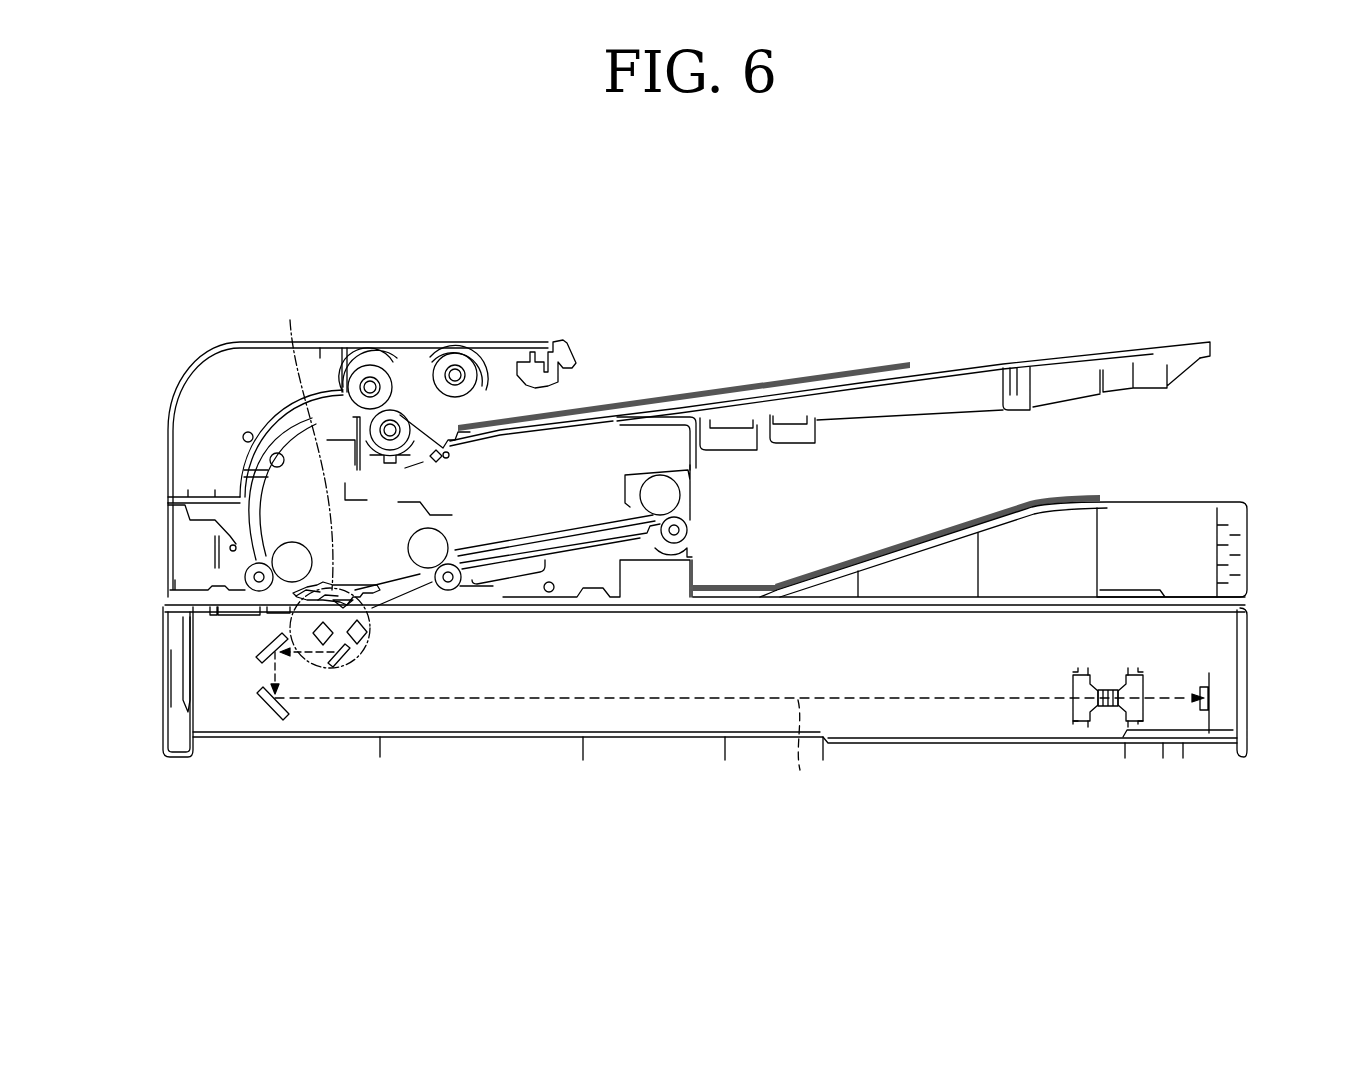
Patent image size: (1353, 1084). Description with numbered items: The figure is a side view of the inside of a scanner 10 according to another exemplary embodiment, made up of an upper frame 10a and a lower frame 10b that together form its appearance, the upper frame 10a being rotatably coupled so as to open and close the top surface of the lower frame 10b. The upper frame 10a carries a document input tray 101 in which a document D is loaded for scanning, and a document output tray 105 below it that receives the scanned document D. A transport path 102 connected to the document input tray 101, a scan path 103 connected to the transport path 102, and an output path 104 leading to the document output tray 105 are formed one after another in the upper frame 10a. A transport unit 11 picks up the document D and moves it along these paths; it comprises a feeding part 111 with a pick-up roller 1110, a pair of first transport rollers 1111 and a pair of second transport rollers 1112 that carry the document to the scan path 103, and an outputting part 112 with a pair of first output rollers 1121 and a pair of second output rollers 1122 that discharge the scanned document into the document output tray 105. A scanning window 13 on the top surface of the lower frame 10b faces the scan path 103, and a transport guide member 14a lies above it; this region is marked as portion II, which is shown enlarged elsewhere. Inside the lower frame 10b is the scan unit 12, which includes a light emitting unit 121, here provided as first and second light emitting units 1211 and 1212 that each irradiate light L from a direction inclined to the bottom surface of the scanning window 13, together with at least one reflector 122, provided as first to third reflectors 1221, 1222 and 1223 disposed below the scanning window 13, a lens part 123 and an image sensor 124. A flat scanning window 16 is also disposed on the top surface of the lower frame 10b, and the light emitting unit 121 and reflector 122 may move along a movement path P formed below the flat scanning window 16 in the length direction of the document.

The scanner 10 is at (684, 132).
The upper frame 10a is at (187, 366).
The lower frame 10b is at (170, 764).
The transport unit 11 is at (592, 228).
The feeding part 111 is at (462, 283).
The pick-up roller 1110 is at (455, 375).
The first transport rollers 1111 is at (390, 430).
The second transport rollers 1112 is at (293, 560).
The outputting part 112 is at (657, 290).
The first output rollers 1121 is at (448, 577).
The second output rollers 1122 is at (674, 530).
The portion II is at (328, 481).
The document input tray 101 is at (1060, 345).
The transport path 102 is at (205, 483).
The scan path 103 is at (370, 608).
The output path 104 is at (557, 537).
The document output tray 105 is at (1118, 500).
The scan unit 12 is at (1185, 797).
The light emitting unit 121 is at (385, 803).
The first light emitting unit 1211 is at (358, 642).
The second light emitting unit 1212 is at (328, 642).
The reflector 122 is at (222, 820).
The first reflector 1221 is at (338, 660).
The second reflector 1222 is at (265, 660).
The third reflector 1223 is at (263, 712).
The lens part 123 is at (1108, 730).
The image sensor 124 is at (1203, 714).
The scanning window 13 is at (290, 632).
The transport guide member 14a is at (310, 604).
The flat scanning window 16 is at (1100, 616).
The document D is at (883, 366).
The light L is at (737, 724).
The movement path P is at (912, 680).